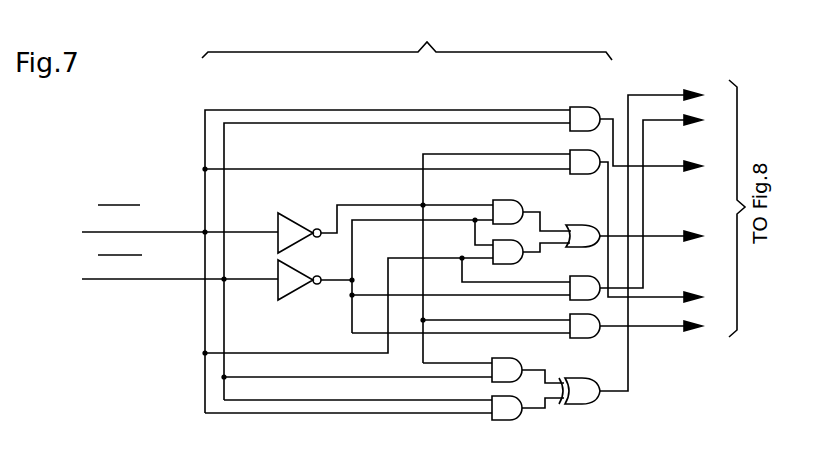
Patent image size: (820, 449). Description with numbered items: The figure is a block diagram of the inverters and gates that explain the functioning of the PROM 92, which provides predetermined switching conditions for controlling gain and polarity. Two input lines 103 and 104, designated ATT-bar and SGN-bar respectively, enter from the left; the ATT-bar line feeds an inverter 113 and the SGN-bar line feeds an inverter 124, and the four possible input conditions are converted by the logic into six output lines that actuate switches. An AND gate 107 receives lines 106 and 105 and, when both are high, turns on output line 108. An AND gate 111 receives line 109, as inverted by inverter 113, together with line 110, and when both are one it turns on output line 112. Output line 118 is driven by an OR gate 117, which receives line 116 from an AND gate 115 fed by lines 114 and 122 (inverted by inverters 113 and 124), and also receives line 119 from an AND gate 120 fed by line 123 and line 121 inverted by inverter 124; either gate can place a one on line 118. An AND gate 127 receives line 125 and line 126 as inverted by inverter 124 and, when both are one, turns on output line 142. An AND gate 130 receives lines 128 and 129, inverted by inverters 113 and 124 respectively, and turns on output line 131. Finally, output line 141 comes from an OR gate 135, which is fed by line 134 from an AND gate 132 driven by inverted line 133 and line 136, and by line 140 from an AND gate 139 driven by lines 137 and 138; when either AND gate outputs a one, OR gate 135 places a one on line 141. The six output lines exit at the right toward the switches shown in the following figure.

The PROM 92 is at (407, 40).
The input line 103 is at (156, 212).
The input line 104 is at (84, 279).
The line 105 is at (327, 123).
The line 106 is at (364, 93).
The AND gate 107 is at (594, 92).
The line 108 is at (670, 170).
The line 109 is at (455, 136).
The line 110 is at (517, 169).
The AND gate 111 is at (581, 149).
The line 112 is at (665, 295).
The inverter 113 is at (290, 199).
The line 114 is at (427, 203).
The AND gate 115 is at (505, 202).
The line 116 is at (549, 228).
The OR gate 117 is at (578, 226).
The line 118 is at (665, 232).
The line 119 is at (540, 245).
The AND gate 120 is at (504, 268).
The line 121 is at (475, 246).
The line 122 is at (484, 218).
The line 123 is at (404, 259).
The inverter 124 is at (282, 277).
The line 125 is at (472, 283).
The line 126 is at (352, 308).
The AND gate 127 is at (575, 300).
The line 128 is at (527, 333).
The line 129 is at (477, 338).
The AND gate 130 is at (583, 338).
The line 131 is at (662, 330).
The AND gate 132 is at (498, 375).
The line 133 is at (423, 363).
The line 134 is at (555, 405).
The OR gate 135 is at (590, 393).
The line 136 is at (324, 377).
The line 137 is at (410, 403).
The line 138 is at (369, 413).
The AND gate 139 is at (517, 416).
The line 140 is at (585, 402).
The line 141 is at (657, 93).
The line 142 is at (665, 122).